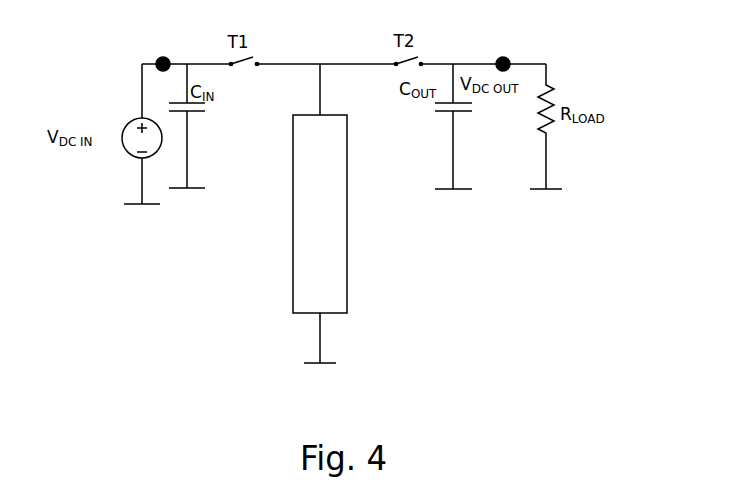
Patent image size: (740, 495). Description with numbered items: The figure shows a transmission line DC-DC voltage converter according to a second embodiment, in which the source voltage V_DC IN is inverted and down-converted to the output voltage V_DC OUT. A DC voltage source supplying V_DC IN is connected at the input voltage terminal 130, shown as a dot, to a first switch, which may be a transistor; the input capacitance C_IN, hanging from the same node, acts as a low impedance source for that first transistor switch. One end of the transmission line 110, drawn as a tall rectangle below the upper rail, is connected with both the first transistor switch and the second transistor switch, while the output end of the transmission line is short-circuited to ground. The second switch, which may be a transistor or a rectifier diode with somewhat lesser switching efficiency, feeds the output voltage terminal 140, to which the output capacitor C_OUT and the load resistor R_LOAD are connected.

The transmission line 110 is at (320, 213).
The input voltage terminal 130 is at (162, 54).
The output voltage terminal 140 is at (502, 54).